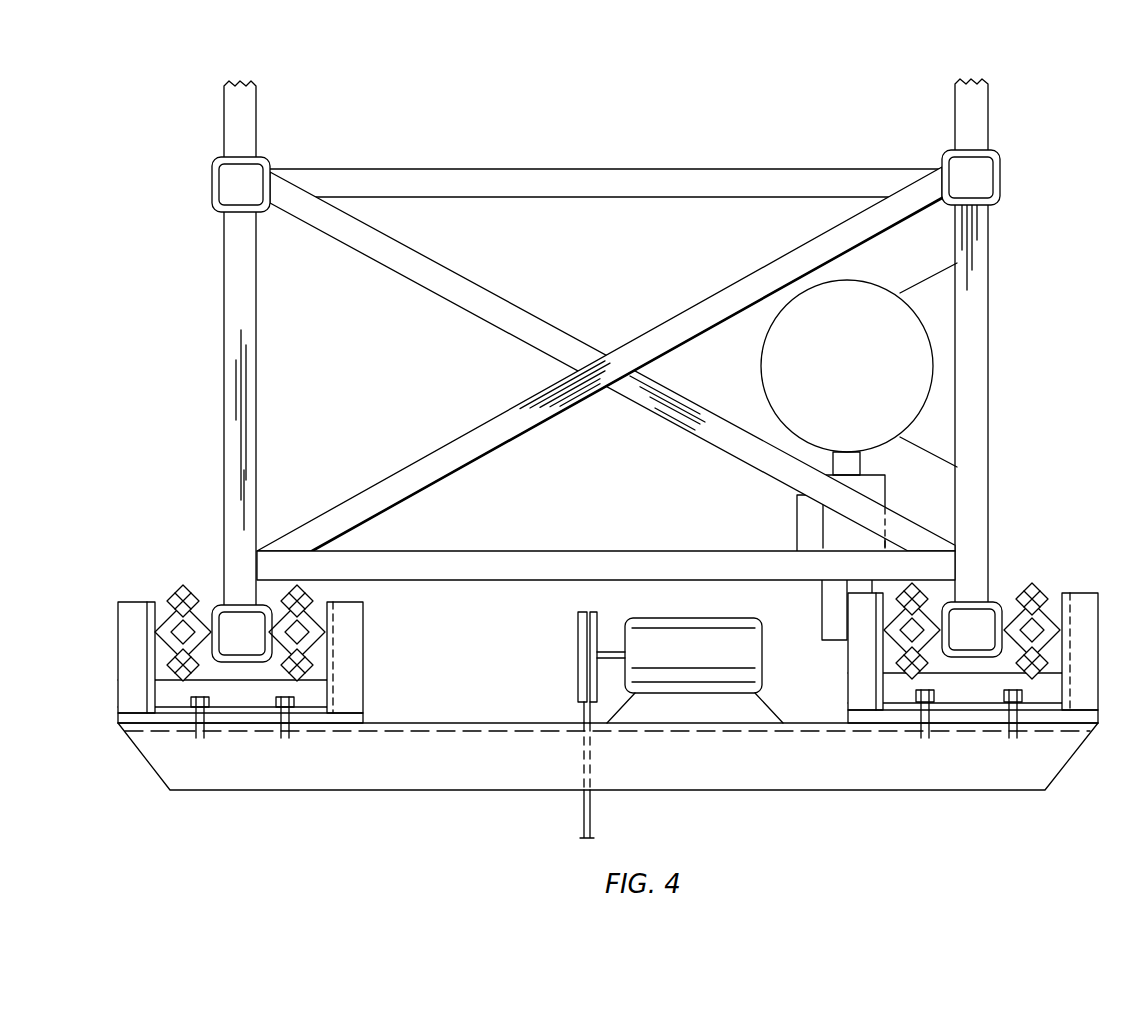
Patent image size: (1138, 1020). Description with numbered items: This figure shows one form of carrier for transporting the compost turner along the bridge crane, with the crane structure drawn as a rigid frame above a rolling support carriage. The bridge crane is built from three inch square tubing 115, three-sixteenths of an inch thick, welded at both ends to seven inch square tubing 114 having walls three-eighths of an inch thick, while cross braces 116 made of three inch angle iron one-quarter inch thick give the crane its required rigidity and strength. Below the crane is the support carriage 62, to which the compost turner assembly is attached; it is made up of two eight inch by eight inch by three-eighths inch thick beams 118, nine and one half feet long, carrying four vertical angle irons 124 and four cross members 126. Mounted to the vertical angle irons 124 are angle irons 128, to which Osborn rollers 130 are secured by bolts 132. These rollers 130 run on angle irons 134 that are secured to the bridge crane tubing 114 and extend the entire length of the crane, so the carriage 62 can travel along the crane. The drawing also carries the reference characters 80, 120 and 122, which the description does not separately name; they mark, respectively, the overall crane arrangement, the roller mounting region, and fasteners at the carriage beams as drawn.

The support carriage 62 is at (310, 803).
The frame assembly 80 is at (634, 112).
The square tubing 114 is at (212, 184).
The tubing 115 is at (256, 360).
The cross braces 116 is at (572, 408).
The beams 118 is at (742, 790).
The mounting bracket assembly 120 is at (388, 645).
The bolt 122 is at (200, 738).
The vertical angle irons 124 is at (362, 662).
The cross members 126 is at (345, 693).
The angle irons 128 is at (165, 632).
The rollers 130 is at (185, 602).
The bolts 132 is at (283, 597).
The angle irons 134 is at (882, 593).